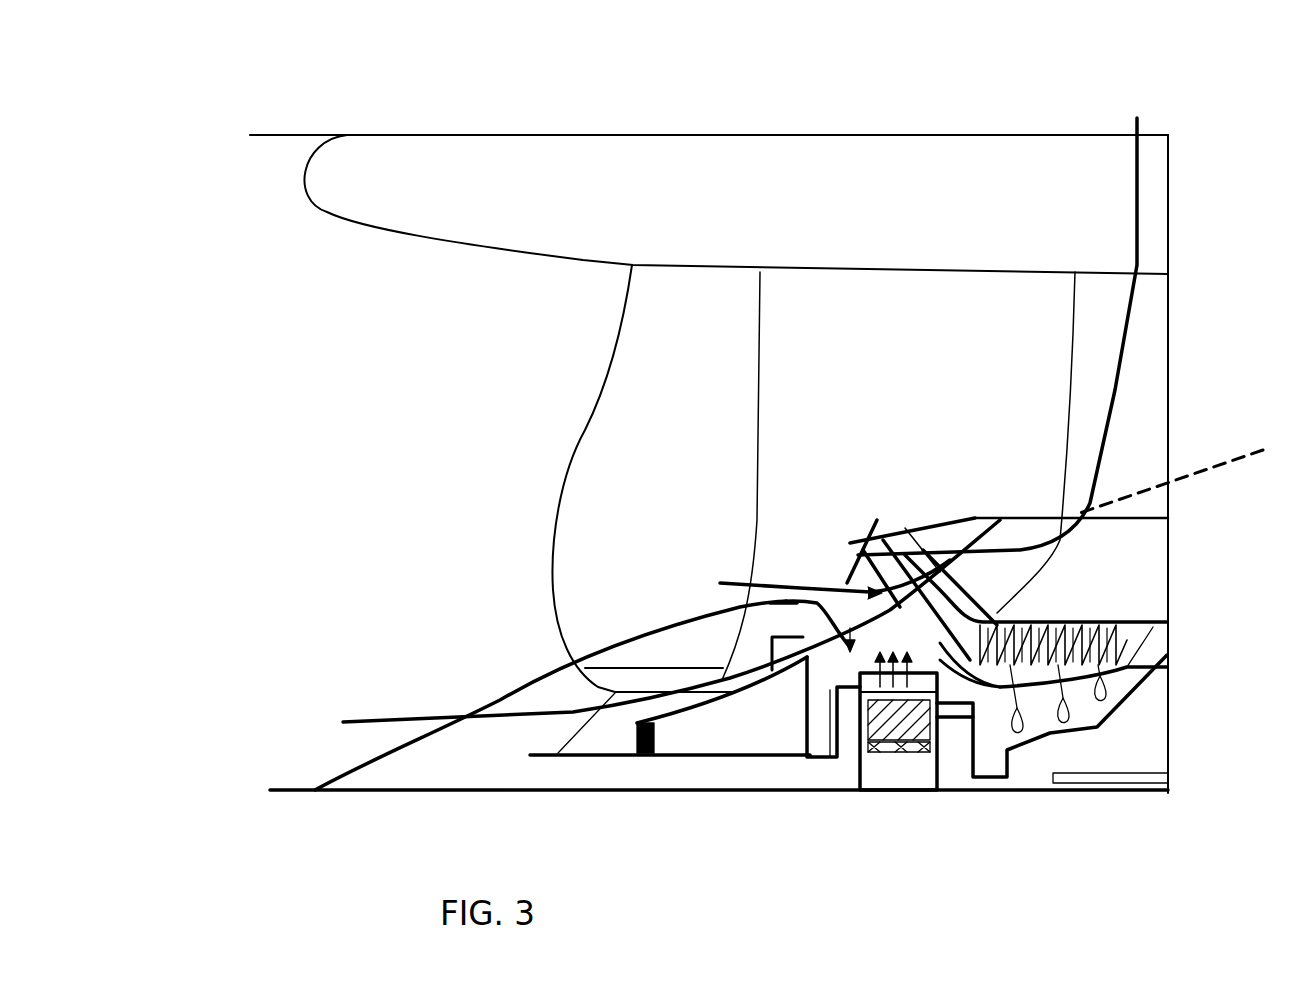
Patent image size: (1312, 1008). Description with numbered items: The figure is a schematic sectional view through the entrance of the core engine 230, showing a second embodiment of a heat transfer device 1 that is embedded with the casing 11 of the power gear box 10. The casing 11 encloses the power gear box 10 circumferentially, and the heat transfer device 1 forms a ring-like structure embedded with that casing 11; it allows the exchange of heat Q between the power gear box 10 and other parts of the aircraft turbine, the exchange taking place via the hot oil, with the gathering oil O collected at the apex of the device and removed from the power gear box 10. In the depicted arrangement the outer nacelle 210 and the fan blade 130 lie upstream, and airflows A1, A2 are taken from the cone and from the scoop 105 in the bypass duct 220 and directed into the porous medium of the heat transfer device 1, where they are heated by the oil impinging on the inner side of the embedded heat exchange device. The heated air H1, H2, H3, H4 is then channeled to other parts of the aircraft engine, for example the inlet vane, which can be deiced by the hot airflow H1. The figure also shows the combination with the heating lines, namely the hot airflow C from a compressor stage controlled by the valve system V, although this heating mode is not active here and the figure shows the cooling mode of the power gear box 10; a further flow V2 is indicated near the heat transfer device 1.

The nacelle 210 is at (955, 132).
The fan blade 130 is at (610, 400).
The bypass duct 220 is at (898, 476).
The core engine 230 is at (940, 500).
The scoop 105 is at (785, 590).
The heated air H1 is at (855, 585).
The heated air H2 is at (920, 513).
The heated air H3 is at (1048, 495).
The heated air H4 is at (1137, 121).
The gathering oil O is at (1180, 481).
The valve system V is at (1042, 618).
The vapor flow V2 is at (845, 621).
The airflow A1 is at (335, 722).
The airflow A2 is at (713, 582).
The casing 11 is at (805, 712).
The heat transfer device 1 is at (855, 702).
The heat Q is at (880, 762).
The power gear box 10 is at (917, 762).
The hot airflow C is at (1080, 690).